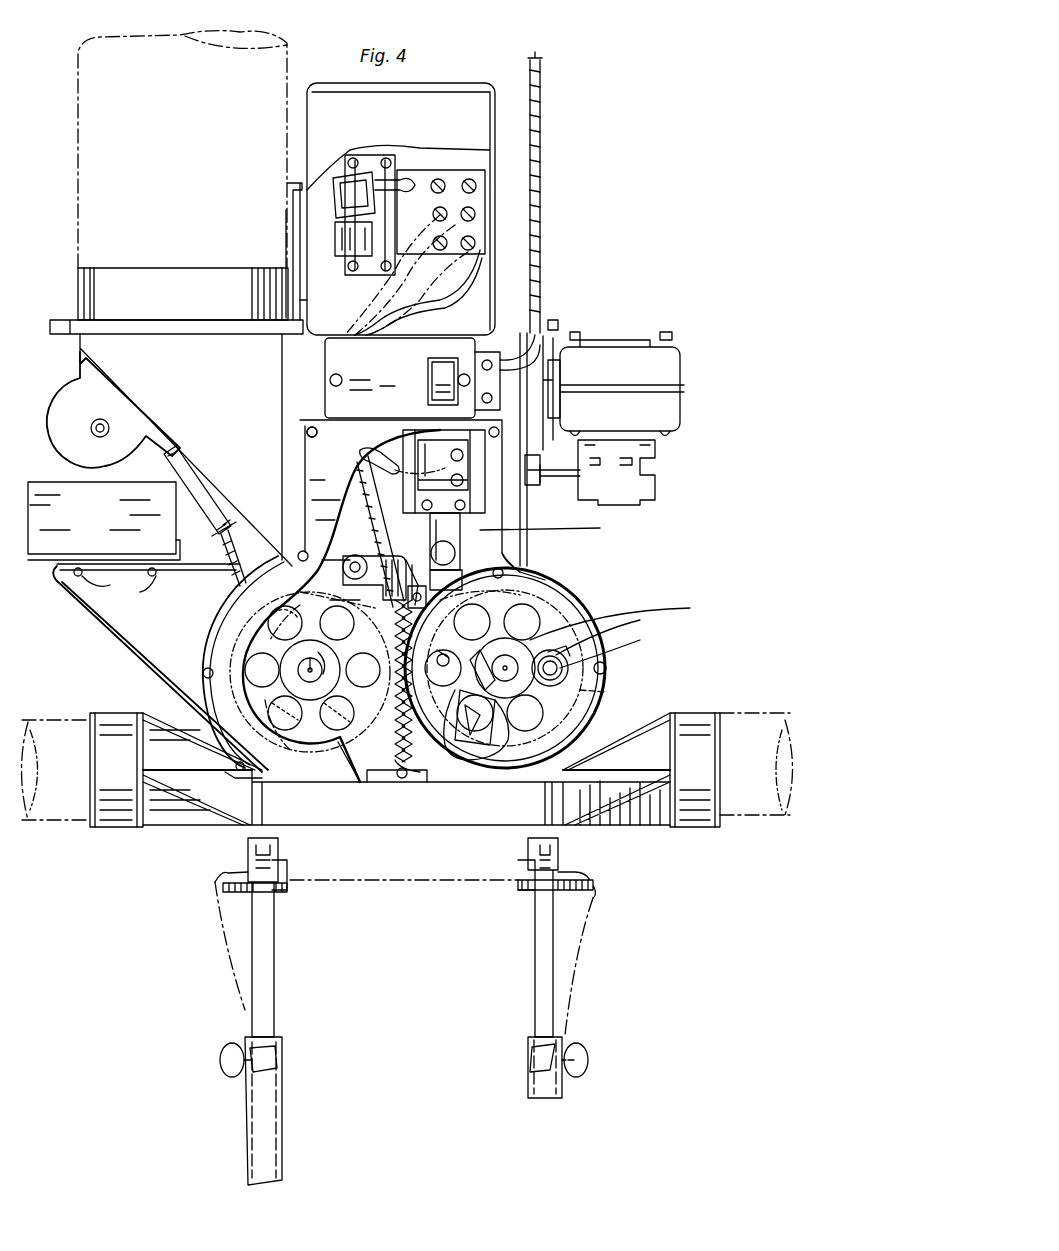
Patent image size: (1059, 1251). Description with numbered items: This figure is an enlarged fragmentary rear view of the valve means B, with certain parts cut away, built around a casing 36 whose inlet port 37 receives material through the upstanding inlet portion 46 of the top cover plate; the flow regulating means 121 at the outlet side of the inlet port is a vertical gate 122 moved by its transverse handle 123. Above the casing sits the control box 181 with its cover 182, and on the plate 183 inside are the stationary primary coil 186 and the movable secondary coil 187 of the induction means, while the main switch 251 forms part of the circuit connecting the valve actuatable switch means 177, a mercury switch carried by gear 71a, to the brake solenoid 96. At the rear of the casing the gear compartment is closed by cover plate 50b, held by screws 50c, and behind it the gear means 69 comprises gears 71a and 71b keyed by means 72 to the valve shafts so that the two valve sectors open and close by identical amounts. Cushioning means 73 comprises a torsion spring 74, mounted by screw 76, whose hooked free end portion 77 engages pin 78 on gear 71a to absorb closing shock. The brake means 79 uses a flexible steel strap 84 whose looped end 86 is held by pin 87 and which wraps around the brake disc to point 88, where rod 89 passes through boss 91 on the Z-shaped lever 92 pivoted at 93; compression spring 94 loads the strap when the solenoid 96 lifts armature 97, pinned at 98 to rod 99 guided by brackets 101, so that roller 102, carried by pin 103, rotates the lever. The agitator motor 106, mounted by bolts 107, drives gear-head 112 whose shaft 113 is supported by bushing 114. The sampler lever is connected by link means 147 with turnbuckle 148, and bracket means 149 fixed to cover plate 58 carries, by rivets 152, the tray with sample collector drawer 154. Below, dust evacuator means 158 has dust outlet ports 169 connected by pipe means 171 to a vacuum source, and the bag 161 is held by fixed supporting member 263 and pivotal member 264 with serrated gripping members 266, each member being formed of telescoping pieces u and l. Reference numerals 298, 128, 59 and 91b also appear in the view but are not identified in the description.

The container 298 is at (182, 149).
The upstanding inlet portion 46 is at (198, 308).
The flow regulating means 121 is at (293, 190).
The vertical gate 122 is at (290, 225).
The transverse handle 123 is at (305, 190).
The cover 182 is at (465, 100).
The plate 183 is at (452, 178).
The movable secondary coil 187 is at (374, 215).
The stationary primary coil 186 is at (342, 250).
The control box 181 is at (495, 300).
The valve means B is at (627, 168).
The main switch 251 is at (428, 370).
The bolts 107 is at (553, 345).
The motor 106 is at (628, 373).
The gear-head 112 is at (628, 478).
The driven shaft 113 is at (572, 478).
The bushing 114 is at (530, 488).
The inlet port 37 is at (216, 393).
The bracket 128 is at (50, 418).
The turnbuckle adjusting means 148 is at (208, 500).
The link means 147 is at (232, 560).
The sample collector drawer 154 is at (104, 523).
The rivets 152 is at (148, 582).
The bracket means 149 is at (100, 638).
The screw 59 is at (203, 670).
The cover plate 50b is at (350, 465).
The screws 50c is at (305, 436).
The casing 36 is at (525, 540).
The brake or stop means 79 is at (485, 538).
The solenoid 96 is at (450, 476).
The armature 97 is at (454, 535).
The pin 98 is at (455, 548).
The rod 99 is at (458, 572).
The pivot 93 is at (355, 555).
The Z-shaped lever member 92 is at (392, 575).
The boss 91 is at (418, 585).
The compression spring 94 is at (420, 590).
The casing cover plate 58 is at (212, 615).
The gear 71b is at (328, 751).
The gear 71a is at (568, 641).
The keying means 72 is at (407, 669).
The point 88 is at (345, 620).
The rod 89 is at (337, 590).
The pin 87 is at (337, 623).
The end of strap 86 is at (363, 670).
The flexible steel strap 84 is at (342, 718).
The track 91b is at (262, 695).
The gear means 69 is at (357, 782).
The brackets 101 is at (468, 600).
The roller 102 is at (472, 622).
The bolt or pin 103 is at (440, 656).
The valve actuatable switch means 177 is at (494, 705).
The torsion spring 74 is at (570, 652).
The screw 76 is at (565, 664).
The cushioning means 73 is at (560, 648).
The pin 78 is at (604, 670).
The hooked free end portion 77 is at (608, 692).
The dust evacuator means 158 is at (406, 811).
The dust outlet ports 169 is at (120, 830).
The pipe means 171 is at (52, 822).
The upper piece u is at (270, 955).
The serrated gripping member 266 is at (235, 884).
The supporting member 264 is at (238, 1010).
The bag 161 is at (565, 962).
The lower piece l is at (275, 1100).
The supporting member 263 is at (578, 1025).